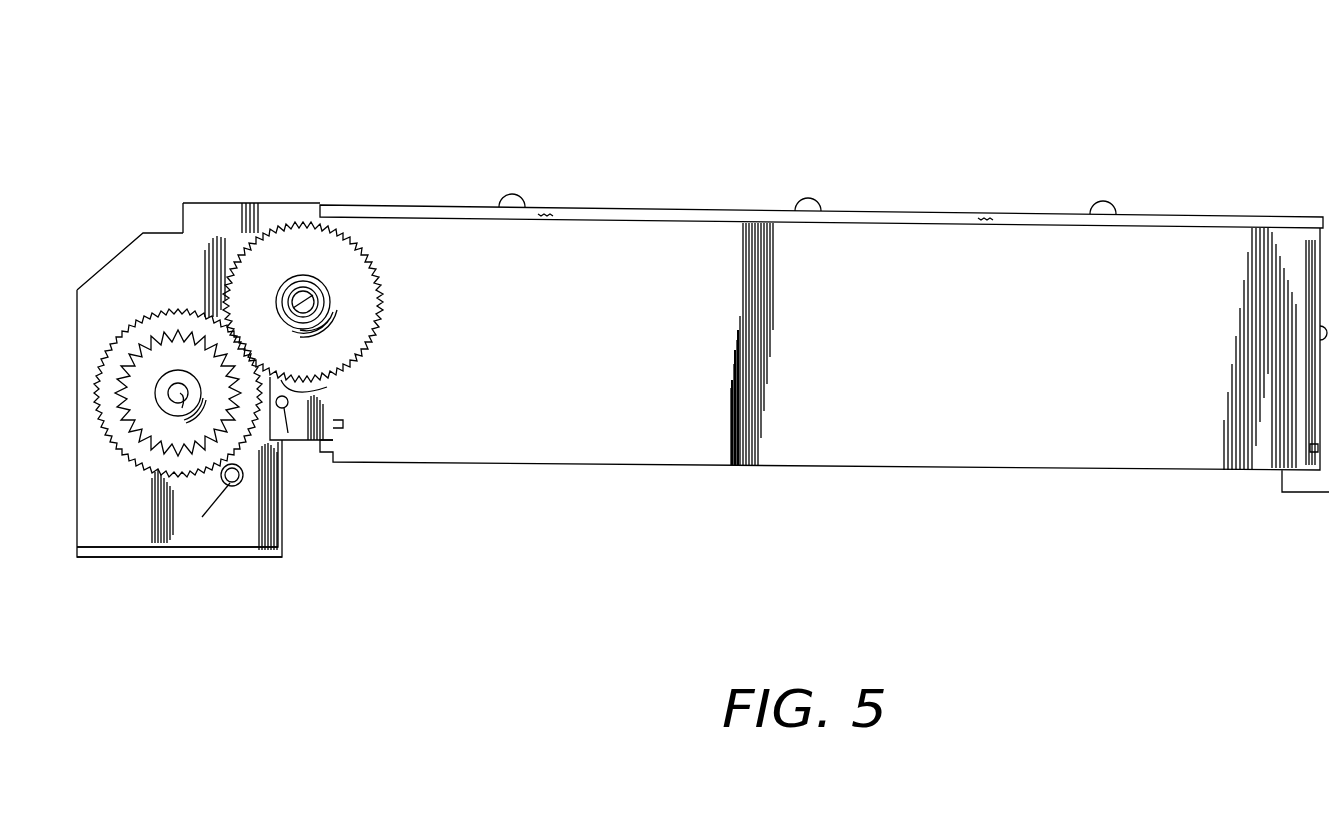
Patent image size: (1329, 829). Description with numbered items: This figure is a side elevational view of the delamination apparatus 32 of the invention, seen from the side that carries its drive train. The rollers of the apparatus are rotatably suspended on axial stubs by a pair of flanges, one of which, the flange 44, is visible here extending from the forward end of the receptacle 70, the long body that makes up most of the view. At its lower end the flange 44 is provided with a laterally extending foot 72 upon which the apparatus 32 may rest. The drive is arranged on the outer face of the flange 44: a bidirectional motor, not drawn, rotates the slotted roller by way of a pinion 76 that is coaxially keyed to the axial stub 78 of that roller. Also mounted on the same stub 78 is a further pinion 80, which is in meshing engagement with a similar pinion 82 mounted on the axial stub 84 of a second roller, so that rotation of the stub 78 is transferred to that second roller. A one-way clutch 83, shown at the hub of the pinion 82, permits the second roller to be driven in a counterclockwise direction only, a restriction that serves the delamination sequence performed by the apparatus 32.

The delamination apparatus 32 is at (596, 80).
The receptacle 70 is at (698, 210).
The foot 72 is at (177, 562).
The flange 44 is at (283, 516).
The pinion 76 is at (140, 393).
The axial stub 78 is at (177, 422).
The further pinion 80 is at (165, 325).
The pinion 82 is at (358, 270).
The one-way clutch 83 is at (335, 303).
The axial stub 84 is at (310, 333).